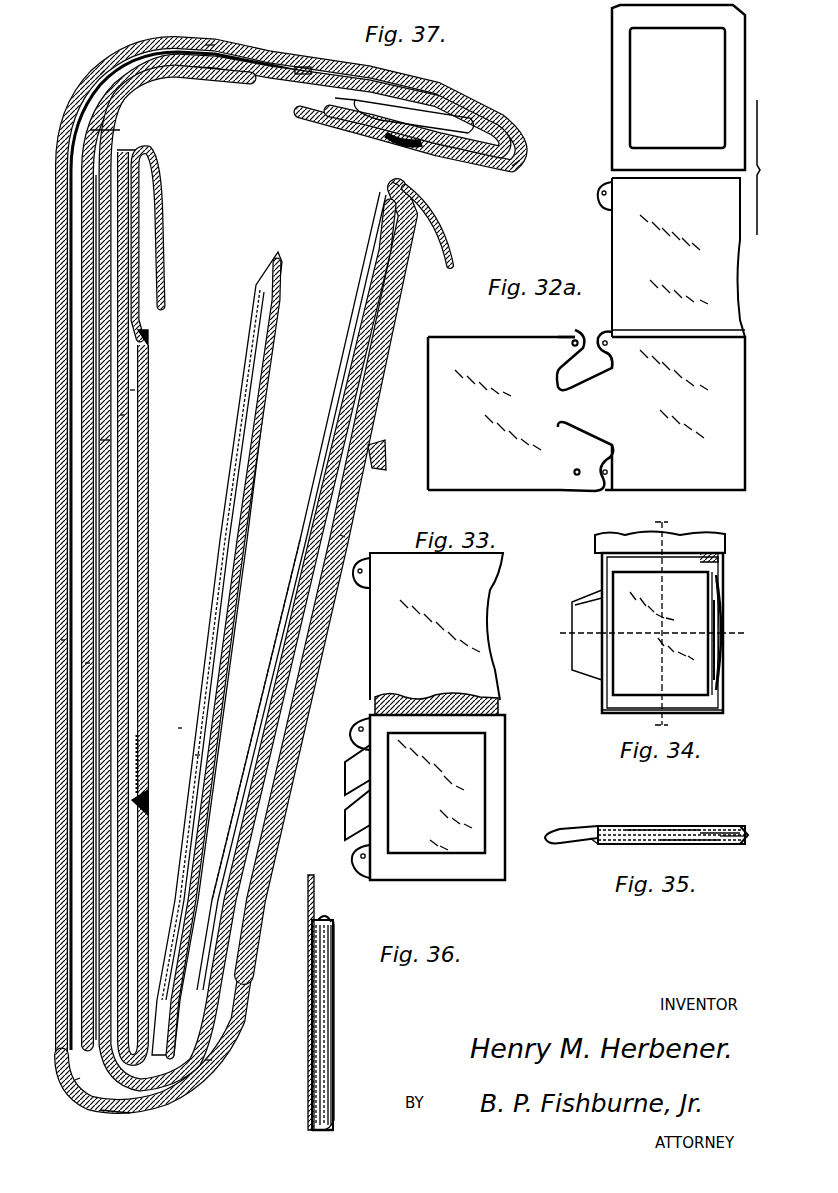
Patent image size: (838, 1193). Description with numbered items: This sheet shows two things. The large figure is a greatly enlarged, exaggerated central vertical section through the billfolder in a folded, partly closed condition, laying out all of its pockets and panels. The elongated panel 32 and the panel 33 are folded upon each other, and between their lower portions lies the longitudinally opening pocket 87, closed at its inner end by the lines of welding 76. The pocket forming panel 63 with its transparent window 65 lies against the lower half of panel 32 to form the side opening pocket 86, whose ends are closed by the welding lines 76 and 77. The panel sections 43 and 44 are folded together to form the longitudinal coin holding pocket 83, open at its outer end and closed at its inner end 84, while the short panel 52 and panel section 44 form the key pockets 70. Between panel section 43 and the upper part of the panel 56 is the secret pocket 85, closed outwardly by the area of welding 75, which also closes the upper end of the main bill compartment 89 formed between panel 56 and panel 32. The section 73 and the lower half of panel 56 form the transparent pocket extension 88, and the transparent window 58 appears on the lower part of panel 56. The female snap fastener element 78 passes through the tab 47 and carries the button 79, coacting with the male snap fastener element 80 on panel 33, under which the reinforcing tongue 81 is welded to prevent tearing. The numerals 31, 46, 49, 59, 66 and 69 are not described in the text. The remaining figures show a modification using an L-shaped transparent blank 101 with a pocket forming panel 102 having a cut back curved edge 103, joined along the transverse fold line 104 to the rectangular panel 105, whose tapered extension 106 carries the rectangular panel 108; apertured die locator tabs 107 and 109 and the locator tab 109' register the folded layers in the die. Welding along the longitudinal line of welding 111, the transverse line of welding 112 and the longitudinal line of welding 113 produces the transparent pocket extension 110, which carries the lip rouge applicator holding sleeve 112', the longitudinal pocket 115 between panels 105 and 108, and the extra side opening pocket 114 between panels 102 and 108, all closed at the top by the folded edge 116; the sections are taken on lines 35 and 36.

In FIG. 37, the hook end 31 is at (505, 165).
In FIG. 37, the elongated panel 32 is at (75, 497).
In FIG. 37, the panel 33 is at (70, 478).
In FIG. 37, the panel section 43 is at (100, 470).
In FIG. 37, the panel section 44 is at (130, 400).
In FIG. 37, the top band 46 is at (205, 55).
In FIG. 37, the tab 47 is at (338, 96).
In FIG. 37, the hook strip 49 is at (163, 300).
In FIG. 37, the short panel 52 is at (118, 435).
In FIG. 37, the panel 56 is at (280, 303).
In FIG. 32A, the panel 56 is at (625, 12).
In FIG. 33, the panel 56 is at (500, 700).
In FIG. 34, the panel 56 is at (600, 546).
In FIG. 35, the panel 56 is at (610, 822).
In FIG. 36, the panel 56 is at (308, 910).
In FIG. 37, the transparent window 58 is at (208, 770).
In FIG. 35, the transparent window 58 is at (636, 828).
In FIG. 37, the tab 59 is at (303, 66).
In FIG. 37, the panel 63 is at (210, 1063).
In FIG. 37, the transparent window 65 is at (352, 332).
In FIG. 37, the curved tab 66 is at (448, 250).
In FIG. 37, the weld spot 69 is at (150, 338).
In FIG. 37, the key pockets 70 is at (137, 522).
In FIG. 37, the section 73 is at (235, 445).
In FIG. 37, the area of welding 75 is at (100, 95).
In FIG. 37, the lines of welding 76 is at (165, 1100).
In FIG. 37, the line of welding 77 is at (390, 190).
In FIG. 37, the female snap fastener element 78 is at (400, 142).
In FIG. 37, the button 79 is at (444, 110).
In FIG. 37, the male snap fastener element 80 is at (380, 470).
In FIG. 37, the reinforcing tongue 81 is at (352, 532).
In FIG. 37, the coin holding pocket 83 is at (108, 408).
In FIG. 37, the closed inner end 84 is at (90, 1075).
In FIG. 37, the secret pocket 85 is at (105, 664).
In FIG. 37, the side opening pocket 86 is at (262, 862).
In FIG. 37, the longitudinally opening pocket 87 is at (310, 660).
In FIG. 37, the transparent pocket extension 88 is at (205, 722).
In FIG. 37, the main compartment 89 is at (85, 640).
In FIG. 32A, the transparent blank 101 is at (552, 328).
In FIG. 32A, the pocket forming panel 102 is at (612, 236).
In FIG. 33, the pocket forming panel 102 is at (495, 566).
In FIG. 34, the pocket forming panel 102 is at (708, 645).
In FIG. 35, the pocket forming panel 102 is at (640, 846).
In FIG. 36, the pocket forming panel 102 is at (335, 1050).
In FIG. 32A, the cut back curved longitudinal edge 103 is at (738, 260).
In FIG. 33, the cut back curved longitudinal edge 103 is at (486, 622).
In FIG. 34, the cut back curved longitudinal edge 103 is at (728, 612).
In FIG. 32A, the transverse fold line 104 is at (720, 325).
In FIG. 33, the transverse fold line 104 is at (432, 705).
In FIG. 32A, the rectangular panel 105 is at (708, 480).
In FIG. 33, the rectangular panel 105 is at (475, 758).
In FIG. 34, the rectangular panel 105 is at (660, 633).
In FIG. 35, the rectangular panel 105 is at (672, 828).
In FIG. 36, the rectangular panel 105 is at (312, 985).
In FIG. 32A, the tapered extension 106 is at (598, 428).
In FIG. 33, the tapered extension 106 is at (480, 726).
In FIG. 34, the tapered extension 106 is at (712, 628).
In FIG. 32A, the die locator tabs 107 is at (603, 338).
In FIG. 32A, the rectangular panel 108 is at (498, 330).
In FIG. 35, the rectangular panel 108 is at (708, 832).
In FIG. 36, the rectangular panel 108 is at (322, 998).
In FIG. 32A, the die locator tabs 109 is at (557, 436).
In FIG. 33, the die locator tabs 109 is at (335, 806).
In FIG. 32A, the locator tab 109' is at (575, 196).
In FIG. 33, the locator tab 109' is at (390, 573).
In FIG. 34, the transparent pocket extension 110 is at (600, 692).
In FIG. 36, the transparent pocket extension 110 is at (341, 1027).
In FIG. 34, the longitudinal line of welding 111 is at (600, 580).
In FIG. 35, the longitudinal line of welding 111 is at (590, 846).
In FIG. 34, the transverse line of welding 112 is at (674, 724).
In FIG. 36, the transverse line of welding 112 is at (340, 1133).
In FIG. 34, the lip rouge applicator holding sleeve 112' is at (565, 635).
In FIG. 35, the lip rouge applicator holding sleeve 112' is at (563, 846).
In FIG. 34, the longitudinal line of welding 113 is at (708, 660).
In FIG. 35, the longitudinal line of welding 113 is at (744, 845).
In FIG. 35, the side opening pocket 114 is at (700, 846).
In FIG. 36, the side opening pocket 114 is at (334, 1072).
In FIG. 35, the longitudinal pocket 115 is at (735, 834).
In FIG. 36, the longitudinal pocket 115 is at (318, 1018).
In FIG. 34, the folded edge 116 is at (720, 558).
In FIG. 36, the folded edge 116 is at (325, 925).
In FIG. 34, the section line 35 is at (566, 628).
In FIG. 34, the section line 36 is at (670, 522).